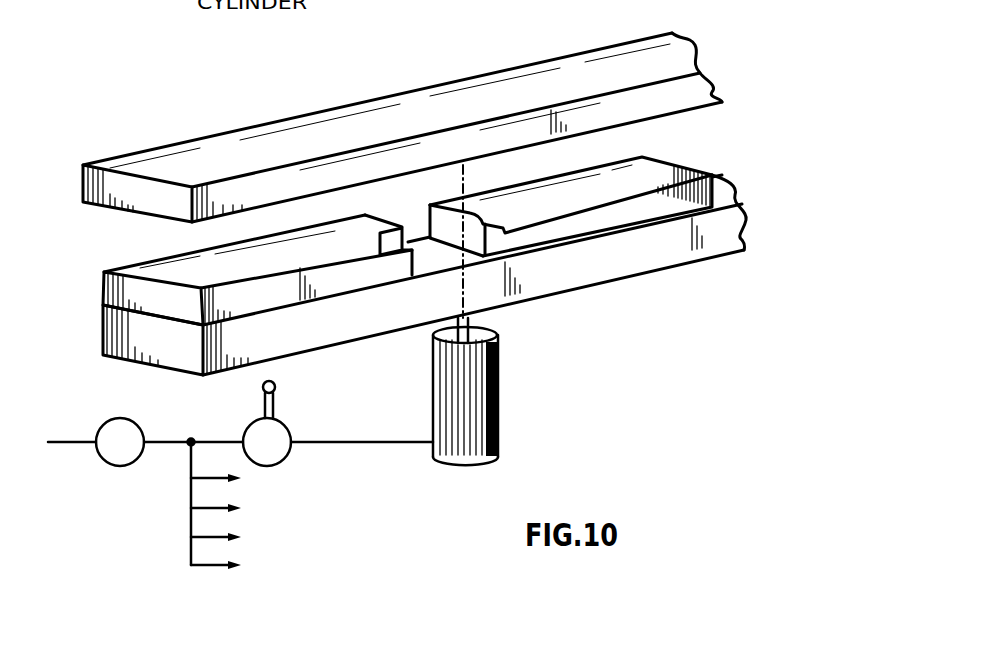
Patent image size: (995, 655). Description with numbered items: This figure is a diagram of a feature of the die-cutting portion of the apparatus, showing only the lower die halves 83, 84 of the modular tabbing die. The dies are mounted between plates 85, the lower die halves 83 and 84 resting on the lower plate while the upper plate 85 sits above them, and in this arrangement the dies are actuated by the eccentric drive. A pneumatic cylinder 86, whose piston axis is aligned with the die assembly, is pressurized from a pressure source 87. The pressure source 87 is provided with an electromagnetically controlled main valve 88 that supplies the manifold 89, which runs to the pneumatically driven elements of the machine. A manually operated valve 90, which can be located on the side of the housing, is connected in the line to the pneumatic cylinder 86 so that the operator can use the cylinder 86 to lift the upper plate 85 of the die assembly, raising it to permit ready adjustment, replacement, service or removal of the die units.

The lower die half 83 is at (347, 243).
The lower die half 84 is at (627, 178).
The plate 85 is at (640, 62).
The pneumatic cylinder 86 is at (498, 453).
The pressure source 87 is at (62, 447).
The electromagnetically controlled main valve 88 is at (101, 425).
The manifold 89 is at (176, 574).
The manually operated valve 90 is at (288, 432).